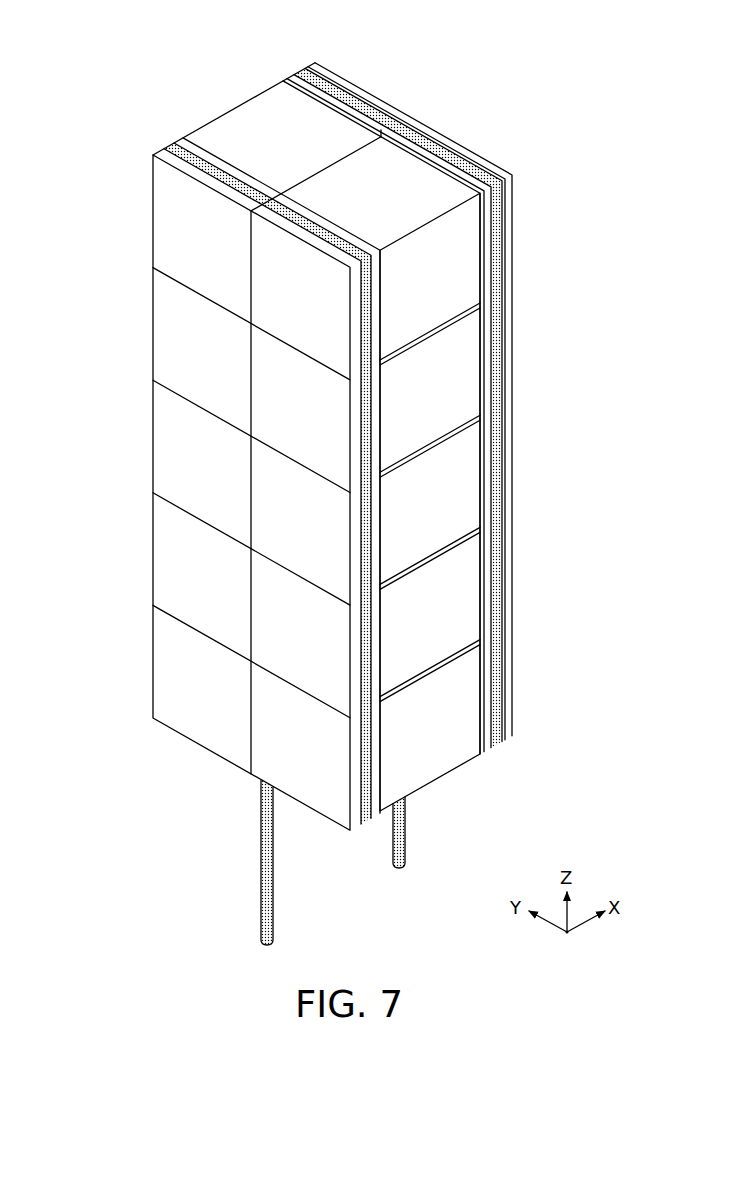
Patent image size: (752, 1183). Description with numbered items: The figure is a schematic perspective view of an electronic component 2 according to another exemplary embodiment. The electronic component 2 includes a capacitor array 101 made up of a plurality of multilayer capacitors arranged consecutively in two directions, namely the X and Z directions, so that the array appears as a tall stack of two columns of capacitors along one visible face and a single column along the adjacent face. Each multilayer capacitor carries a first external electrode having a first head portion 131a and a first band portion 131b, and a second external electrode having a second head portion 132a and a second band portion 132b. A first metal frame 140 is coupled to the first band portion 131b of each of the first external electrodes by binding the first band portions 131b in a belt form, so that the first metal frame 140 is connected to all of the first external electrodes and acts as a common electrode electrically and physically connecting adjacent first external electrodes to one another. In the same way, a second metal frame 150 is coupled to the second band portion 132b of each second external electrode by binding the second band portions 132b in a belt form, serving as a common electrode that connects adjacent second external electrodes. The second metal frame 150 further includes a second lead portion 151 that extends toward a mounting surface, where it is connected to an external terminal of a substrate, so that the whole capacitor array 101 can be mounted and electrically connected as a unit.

The electronic component 2 is at (123, 33).
The capacitor array 101 is at (228, 112).
The first head portion 131a is at (190, 194).
The first band portion 131b is at (354, 352).
The second head portion 132a is at (512, 194).
The second band portion 132b is at (506, 227).
The first metal frame 140 is at (360, 450).
The second metal frame 150 is at (512, 341).
The second lead portion 151 is at (405, 828).